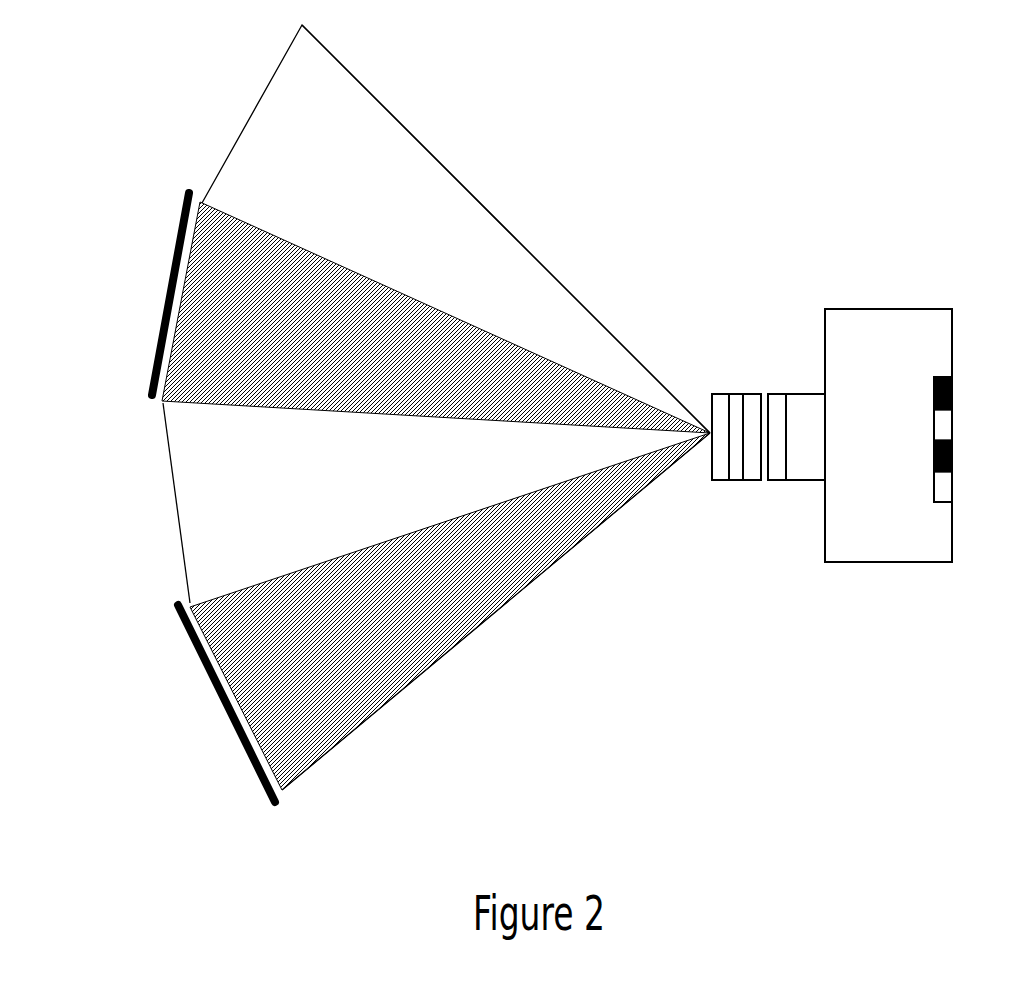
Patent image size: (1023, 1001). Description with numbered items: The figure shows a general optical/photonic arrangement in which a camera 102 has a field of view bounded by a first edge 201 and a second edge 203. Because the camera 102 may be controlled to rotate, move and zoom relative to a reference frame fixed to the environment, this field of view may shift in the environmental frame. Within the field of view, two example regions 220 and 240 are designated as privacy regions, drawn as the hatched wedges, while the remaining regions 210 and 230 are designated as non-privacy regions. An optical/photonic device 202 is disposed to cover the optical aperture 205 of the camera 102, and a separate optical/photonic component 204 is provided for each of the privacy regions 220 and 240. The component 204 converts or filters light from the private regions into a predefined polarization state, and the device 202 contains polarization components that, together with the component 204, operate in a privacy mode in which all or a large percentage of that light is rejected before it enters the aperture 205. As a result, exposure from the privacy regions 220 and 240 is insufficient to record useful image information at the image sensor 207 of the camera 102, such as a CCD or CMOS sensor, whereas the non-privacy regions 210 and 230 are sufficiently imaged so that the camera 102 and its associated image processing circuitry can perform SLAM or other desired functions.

The camera 102 is at (904, 308).
The field of view boundary 201 is at (605, 328).
The optical/photonic device 202 is at (743, 380).
The field of view boundary 203 is at (513, 593).
The optical/photonic component 204 is at (173, 243).
The optical aperture 205 is at (785, 488).
The image sensor 207 is at (953, 422).
The non-privacy region 210 is at (225, 107).
The privacy region 220 is at (133, 288).
The non-privacy region 230 is at (103, 531).
The privacy region 240 is at (183, 737).